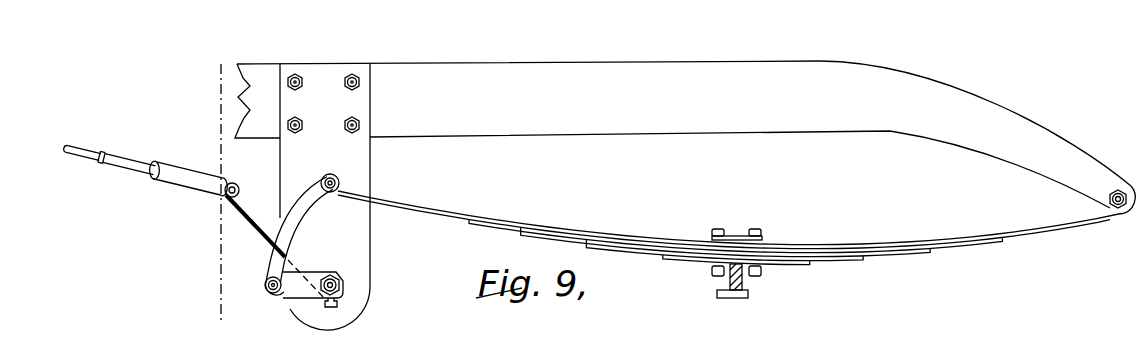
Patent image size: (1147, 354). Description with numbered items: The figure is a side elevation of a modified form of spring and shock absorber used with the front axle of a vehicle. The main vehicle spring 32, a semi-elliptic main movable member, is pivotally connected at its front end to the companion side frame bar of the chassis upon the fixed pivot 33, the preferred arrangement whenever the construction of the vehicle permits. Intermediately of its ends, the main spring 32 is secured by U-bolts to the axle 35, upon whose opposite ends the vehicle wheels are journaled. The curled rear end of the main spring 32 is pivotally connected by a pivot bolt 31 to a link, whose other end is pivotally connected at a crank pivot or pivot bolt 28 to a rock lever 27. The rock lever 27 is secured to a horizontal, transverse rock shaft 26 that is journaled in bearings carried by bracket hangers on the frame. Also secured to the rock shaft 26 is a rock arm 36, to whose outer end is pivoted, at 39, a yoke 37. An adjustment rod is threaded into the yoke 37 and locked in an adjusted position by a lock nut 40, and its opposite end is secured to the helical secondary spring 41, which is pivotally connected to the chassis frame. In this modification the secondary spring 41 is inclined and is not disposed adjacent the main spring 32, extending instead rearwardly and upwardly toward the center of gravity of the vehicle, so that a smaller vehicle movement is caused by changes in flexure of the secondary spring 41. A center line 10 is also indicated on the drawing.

The center line 10 is at (216, 69).
The rock shaft 26 is at (340, 285).
The rock lever 27 is at (302, 300).
The pivot bolt 28 is at (268, 294).
The pivot bolt 31 is at (340, 183).
The main vehicle spring 32 is at (843, 263).
The pivotal connection 33 is at (1118, 210).
The axle 35 is at (729, 299).
The rock arm 36 is at (336, 272).
The yoke 37 is at (167, 176).
The pivot 39 is at (237, 185).
The lock nut 40 is at (101, 161).
The helical secondary spring 41 is at (70, 143).